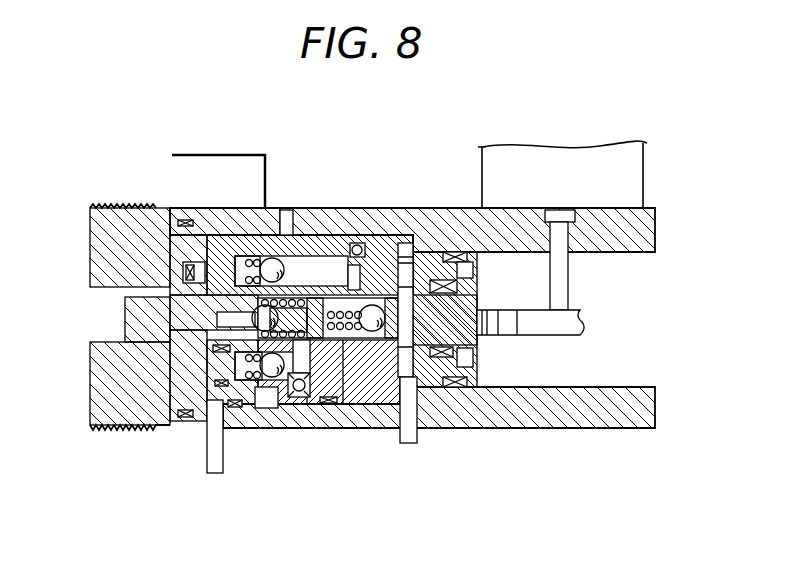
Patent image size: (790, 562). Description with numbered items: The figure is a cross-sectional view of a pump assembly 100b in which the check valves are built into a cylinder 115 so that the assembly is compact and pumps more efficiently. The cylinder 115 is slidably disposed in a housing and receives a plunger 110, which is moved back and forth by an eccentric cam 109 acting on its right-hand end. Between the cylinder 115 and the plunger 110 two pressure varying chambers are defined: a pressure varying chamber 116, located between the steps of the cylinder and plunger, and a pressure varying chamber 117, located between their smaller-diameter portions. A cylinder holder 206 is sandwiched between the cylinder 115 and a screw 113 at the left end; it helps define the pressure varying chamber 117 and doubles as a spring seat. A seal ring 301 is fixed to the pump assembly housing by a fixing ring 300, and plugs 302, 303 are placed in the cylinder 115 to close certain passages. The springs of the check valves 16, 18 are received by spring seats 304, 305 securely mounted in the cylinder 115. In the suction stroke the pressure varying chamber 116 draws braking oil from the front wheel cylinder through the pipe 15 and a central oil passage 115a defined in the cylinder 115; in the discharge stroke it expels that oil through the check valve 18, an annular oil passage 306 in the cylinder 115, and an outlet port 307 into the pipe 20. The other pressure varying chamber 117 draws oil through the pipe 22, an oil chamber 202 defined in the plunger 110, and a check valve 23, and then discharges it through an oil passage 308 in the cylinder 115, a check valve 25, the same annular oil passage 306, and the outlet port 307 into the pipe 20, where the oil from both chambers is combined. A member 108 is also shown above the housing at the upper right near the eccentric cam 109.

The screw 113 is at (105, 401).
The central oil passage 115a is at (220, 318).
The check valve 16 is at (155, 208).
The spring seat 304 is at (190, 268).
The spring seat 305 is at (180, 363).
The pressure varying chamber 116 is at (326, 243).
The plug 303 is at (358, 243).
The outlet port 307 is at (262, 207).
The cylinder 115 is at (317, 372).
The check valve 23 is at (372, 395).
The plug 302 is at (312, 395).
The pressure varying chamber 117 is at (360, 395).
The check valve 18 is at (282, 413).
The annular oil passage 306 is at (263, 410).
The cylinder holder 206 is at (168, 420).
The branch pipe 15 is at (215, 477).
The oil passage 308 is at (385, 250).
The plunger 110 is at (455, 312).
The seal ring 301 is at (467, 397).
The fixing ring 300 is at (478, 368).
The oil chamber 202 is at (443, 395).
The check valve 25 is at (283, 237).
The branch pipe 22 is at (408, 448).
The eccentric cam 109 is at (575, 325).
The carriage 108 is at (578, 172).
The branch pipe 20 is at (195, 153).
The pump assembly 100b is at (485, 490).